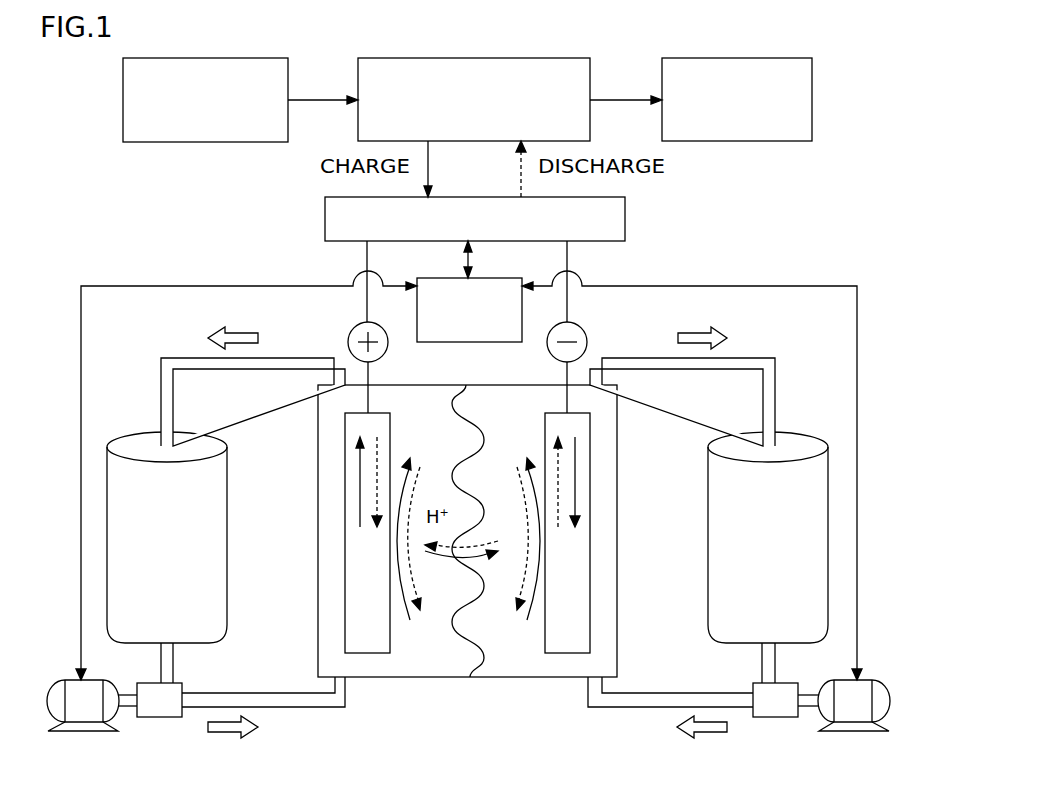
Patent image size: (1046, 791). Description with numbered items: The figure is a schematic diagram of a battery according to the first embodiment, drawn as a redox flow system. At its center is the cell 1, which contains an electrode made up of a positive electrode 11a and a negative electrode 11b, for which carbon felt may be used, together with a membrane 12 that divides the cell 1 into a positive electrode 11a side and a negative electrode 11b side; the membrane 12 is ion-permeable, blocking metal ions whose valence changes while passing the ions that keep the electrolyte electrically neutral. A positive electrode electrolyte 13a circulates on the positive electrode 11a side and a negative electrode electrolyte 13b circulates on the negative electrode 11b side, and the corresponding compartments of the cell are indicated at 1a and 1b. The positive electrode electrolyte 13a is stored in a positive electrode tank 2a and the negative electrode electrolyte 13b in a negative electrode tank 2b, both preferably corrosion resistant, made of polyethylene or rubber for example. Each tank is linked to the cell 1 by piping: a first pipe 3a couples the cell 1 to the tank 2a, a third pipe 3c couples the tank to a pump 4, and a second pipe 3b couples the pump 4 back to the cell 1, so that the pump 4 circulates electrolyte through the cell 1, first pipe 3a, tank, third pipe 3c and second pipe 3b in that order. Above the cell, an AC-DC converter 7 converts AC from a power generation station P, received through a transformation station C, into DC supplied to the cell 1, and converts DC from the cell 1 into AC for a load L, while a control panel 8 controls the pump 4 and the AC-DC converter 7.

The power generation station P is at (236, 57).
The transformation station C is at (540, 57).
The load L is at (762, 57).
The AC-DC converter 7 is at (626, 220).
The control panel 8 is at (468, 342).
The cell 1 is at (301, 480).
The positive electrode cell 1a is at (413, 680).
The negative electrode cell 1b is at (525, 680).
The positive electrode 11a is at (343, 615).
The negative electrode 11b is at (592, 612).
The membrane 12 is at (470, 660).
The positive electrode electrolyte 13a is at (367, 663).
The negative electrode electrolyte 13b is at (568, 663).
The positive electrode tank 2a is at (146, 430).
The negative electrode tank 2b is at (788, 430).
The first pipe 3a is at (187, 357).
The second pipe 3b is at (300, 708).
The third pipe 3c is at (159, 663).
The pump 4 is at (87, 712).